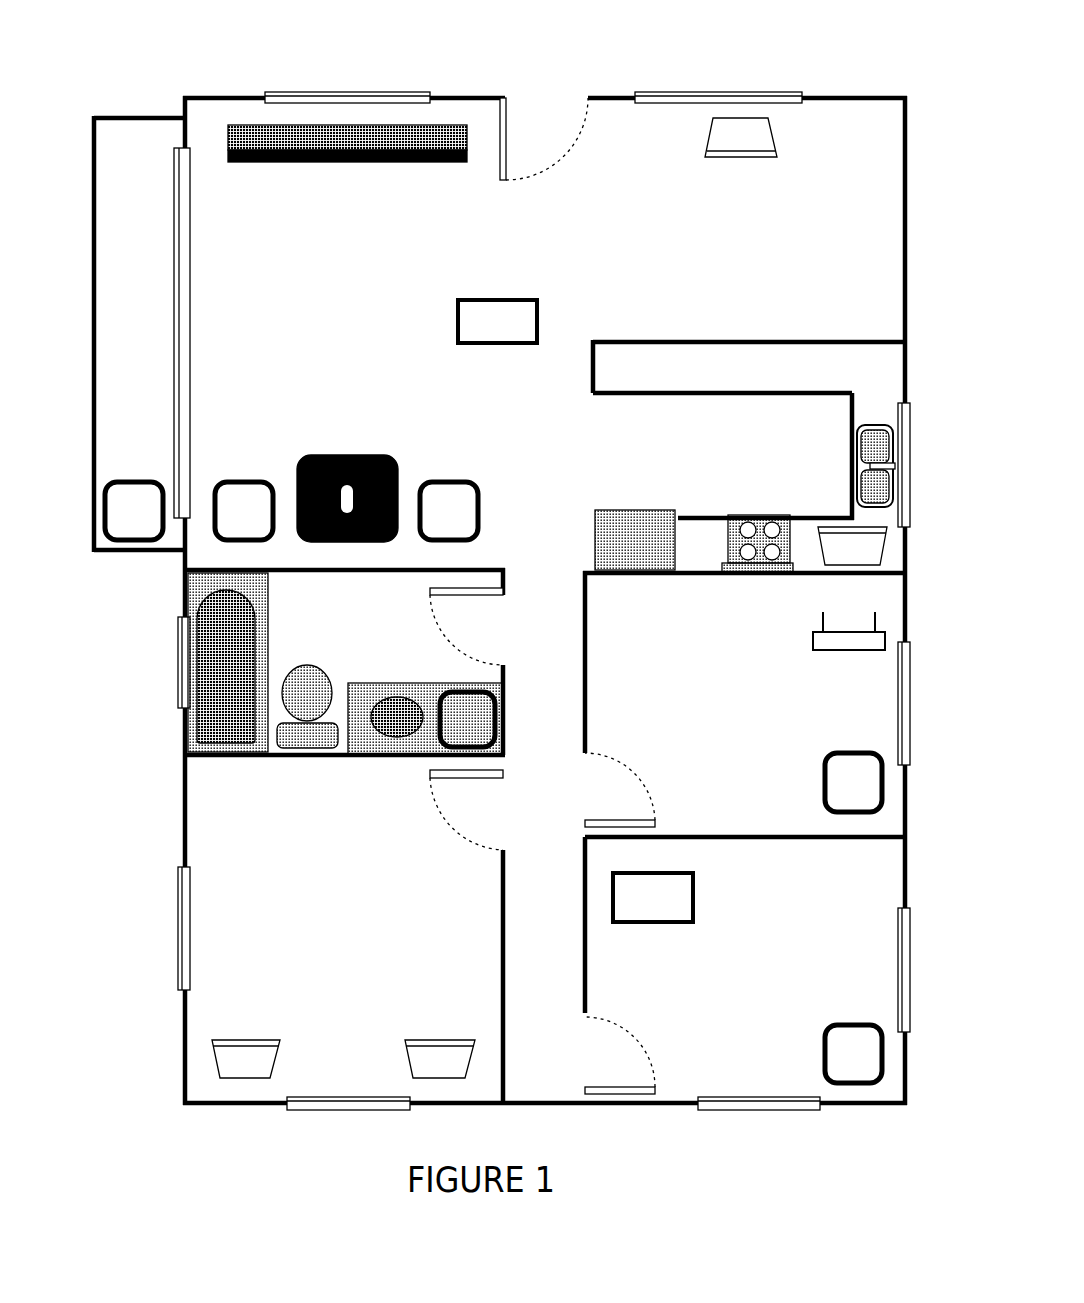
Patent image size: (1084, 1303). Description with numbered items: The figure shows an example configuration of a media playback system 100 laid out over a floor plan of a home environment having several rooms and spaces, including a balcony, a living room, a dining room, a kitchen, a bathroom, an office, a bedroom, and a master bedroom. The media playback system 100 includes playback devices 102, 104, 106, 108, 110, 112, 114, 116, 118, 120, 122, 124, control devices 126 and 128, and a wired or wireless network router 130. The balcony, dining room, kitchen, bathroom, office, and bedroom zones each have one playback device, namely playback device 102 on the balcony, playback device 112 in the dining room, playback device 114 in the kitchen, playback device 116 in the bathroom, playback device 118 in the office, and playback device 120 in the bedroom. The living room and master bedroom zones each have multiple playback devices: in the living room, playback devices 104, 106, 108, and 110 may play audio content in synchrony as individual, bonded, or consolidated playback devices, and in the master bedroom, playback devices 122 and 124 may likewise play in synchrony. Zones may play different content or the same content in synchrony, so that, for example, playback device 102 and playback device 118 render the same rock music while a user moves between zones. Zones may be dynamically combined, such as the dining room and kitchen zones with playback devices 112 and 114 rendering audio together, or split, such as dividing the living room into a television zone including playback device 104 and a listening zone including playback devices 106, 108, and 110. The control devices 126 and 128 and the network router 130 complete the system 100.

The media playback system 100 is at (591, 56).
The playback device 102 is at (115, 522).
The playback device 104 is at (329, 151).
The playback device 106 is at (225, 522).
The playback device 108 is at (430, 522).
The playback device 110 is at (329, 482).
The playback device 112 is at (723, 148).
The playback device 114 is at (834, 561).
The playback device 116 is at (448, 731).
The playback device 118 is at (834, 794).
The playback device 120 is at (834, 1065).
The playback device 122 is at (228, 1074).
The playback device 124 is at (422, 1074).
The control device 126 is at (479, 334).
The control device 128 is at (635, 909).
The network router 130 is at (812, 643).